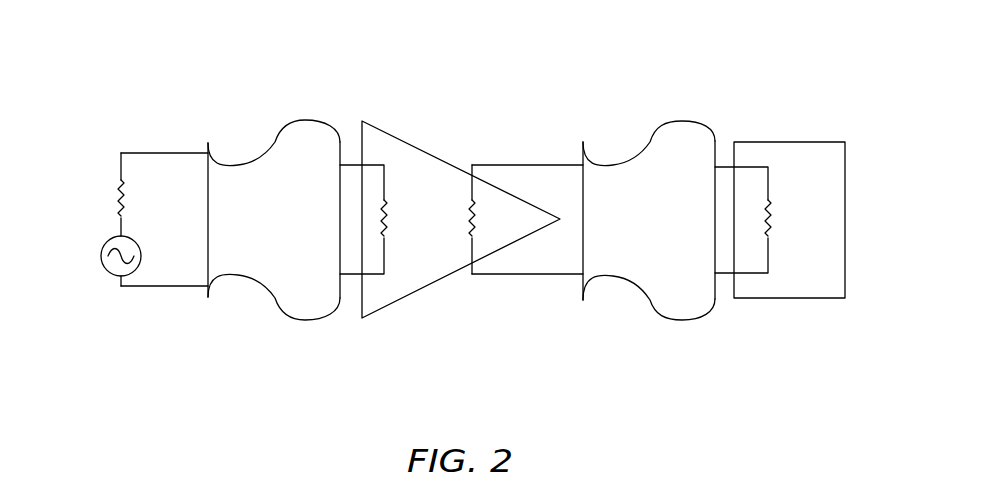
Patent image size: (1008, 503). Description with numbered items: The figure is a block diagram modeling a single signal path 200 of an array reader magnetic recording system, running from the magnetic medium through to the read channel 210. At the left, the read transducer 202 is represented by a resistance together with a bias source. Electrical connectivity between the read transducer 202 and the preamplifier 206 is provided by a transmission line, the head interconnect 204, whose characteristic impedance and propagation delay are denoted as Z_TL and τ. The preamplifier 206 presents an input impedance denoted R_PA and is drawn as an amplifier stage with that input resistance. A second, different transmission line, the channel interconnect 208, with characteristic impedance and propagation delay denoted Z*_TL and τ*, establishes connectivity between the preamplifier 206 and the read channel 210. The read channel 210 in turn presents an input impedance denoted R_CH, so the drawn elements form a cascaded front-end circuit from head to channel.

The signal path 200 is at (133, 75).
The read transducer 202 is at (90, 279).
The head interconnect 204 is at (293, 122).
The preamplifier 206 is at (425, 150).
The channel interconnect 208 is at (668, 121).
The read channel 210 is at (778, 141).